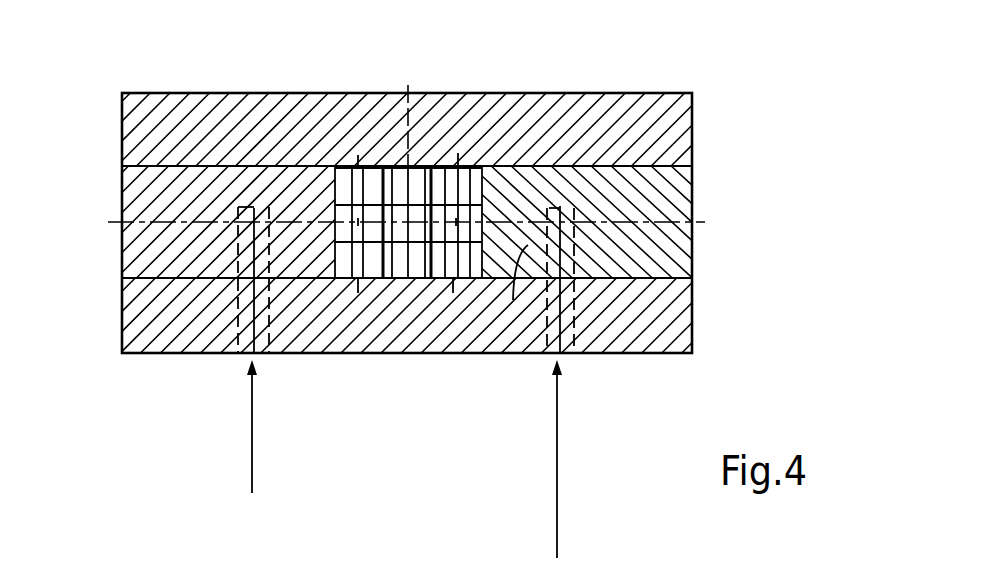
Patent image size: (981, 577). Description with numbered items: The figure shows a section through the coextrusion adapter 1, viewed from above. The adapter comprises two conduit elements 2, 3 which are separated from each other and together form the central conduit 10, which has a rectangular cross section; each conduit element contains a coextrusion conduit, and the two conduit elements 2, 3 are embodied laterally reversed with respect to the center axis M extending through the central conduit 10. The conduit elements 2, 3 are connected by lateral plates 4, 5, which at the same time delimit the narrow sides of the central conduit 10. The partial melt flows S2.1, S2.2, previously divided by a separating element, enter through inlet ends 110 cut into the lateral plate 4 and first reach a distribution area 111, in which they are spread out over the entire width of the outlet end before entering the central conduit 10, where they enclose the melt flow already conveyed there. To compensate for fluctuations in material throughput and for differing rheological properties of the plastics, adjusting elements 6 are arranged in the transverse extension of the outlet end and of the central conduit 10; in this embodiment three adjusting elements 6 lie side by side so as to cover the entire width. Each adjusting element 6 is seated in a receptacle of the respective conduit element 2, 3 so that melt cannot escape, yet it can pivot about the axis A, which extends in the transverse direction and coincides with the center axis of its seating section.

The coextrusion adapter 1 is at (172, 82).
The conduit element 2 is at (692, 250).
The conduit element 3 is at (122, 195).
The lateral plate 4 is at (692, 333).
The lateral plate 5 is at (692, 127).
The adjusting element 6 is at (472, 183).
The central conduit 10 is at (400, 263).
The inlet end 110 is at (236, 353).
The distribution area 111 is at (513, 300).
The pivot axis A is at (457, 155).
The center axis M is at (408, 278).
The partial melt flow S2.1 is at (252, 490).
The partial melt flow S2.2 is at (557, 538).